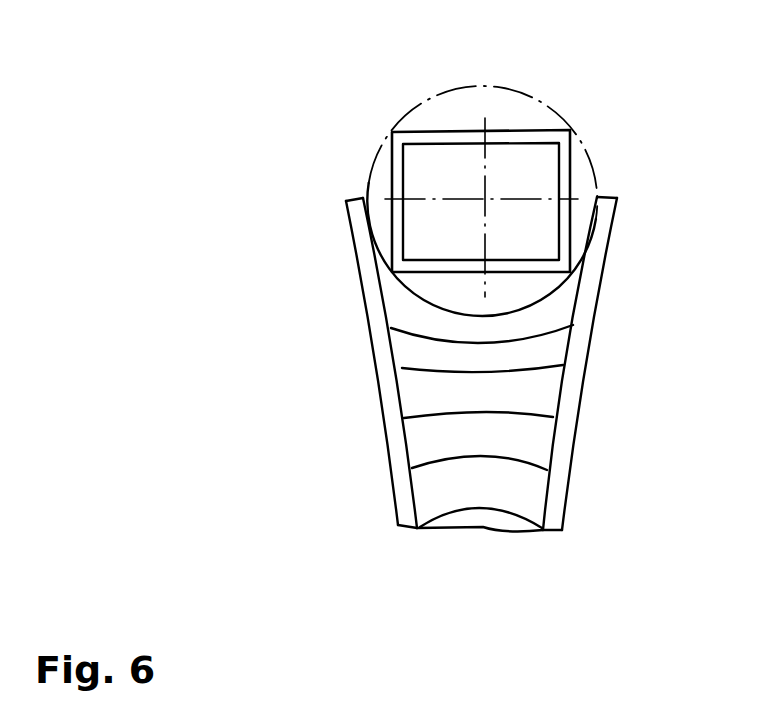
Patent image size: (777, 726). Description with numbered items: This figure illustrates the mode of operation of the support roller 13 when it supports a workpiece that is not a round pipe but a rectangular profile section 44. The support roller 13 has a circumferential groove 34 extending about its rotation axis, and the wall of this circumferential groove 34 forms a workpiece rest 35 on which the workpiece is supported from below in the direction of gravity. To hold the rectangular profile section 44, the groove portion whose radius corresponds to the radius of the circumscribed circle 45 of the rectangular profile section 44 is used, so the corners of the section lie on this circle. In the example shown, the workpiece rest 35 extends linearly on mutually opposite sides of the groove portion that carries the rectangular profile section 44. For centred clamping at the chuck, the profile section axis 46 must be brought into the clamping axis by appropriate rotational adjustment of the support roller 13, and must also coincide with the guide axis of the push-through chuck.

The support roller 13 is at (353, 396).
The circumferential groove 34 is at (542, 303).
The workpiece rest 35 is at (392, 272).
The rectangular profile section 44 is at (563, 167).
The circumscribed circle 45 is at (373, 163).
The profile section axis 46 is at (483, 197).